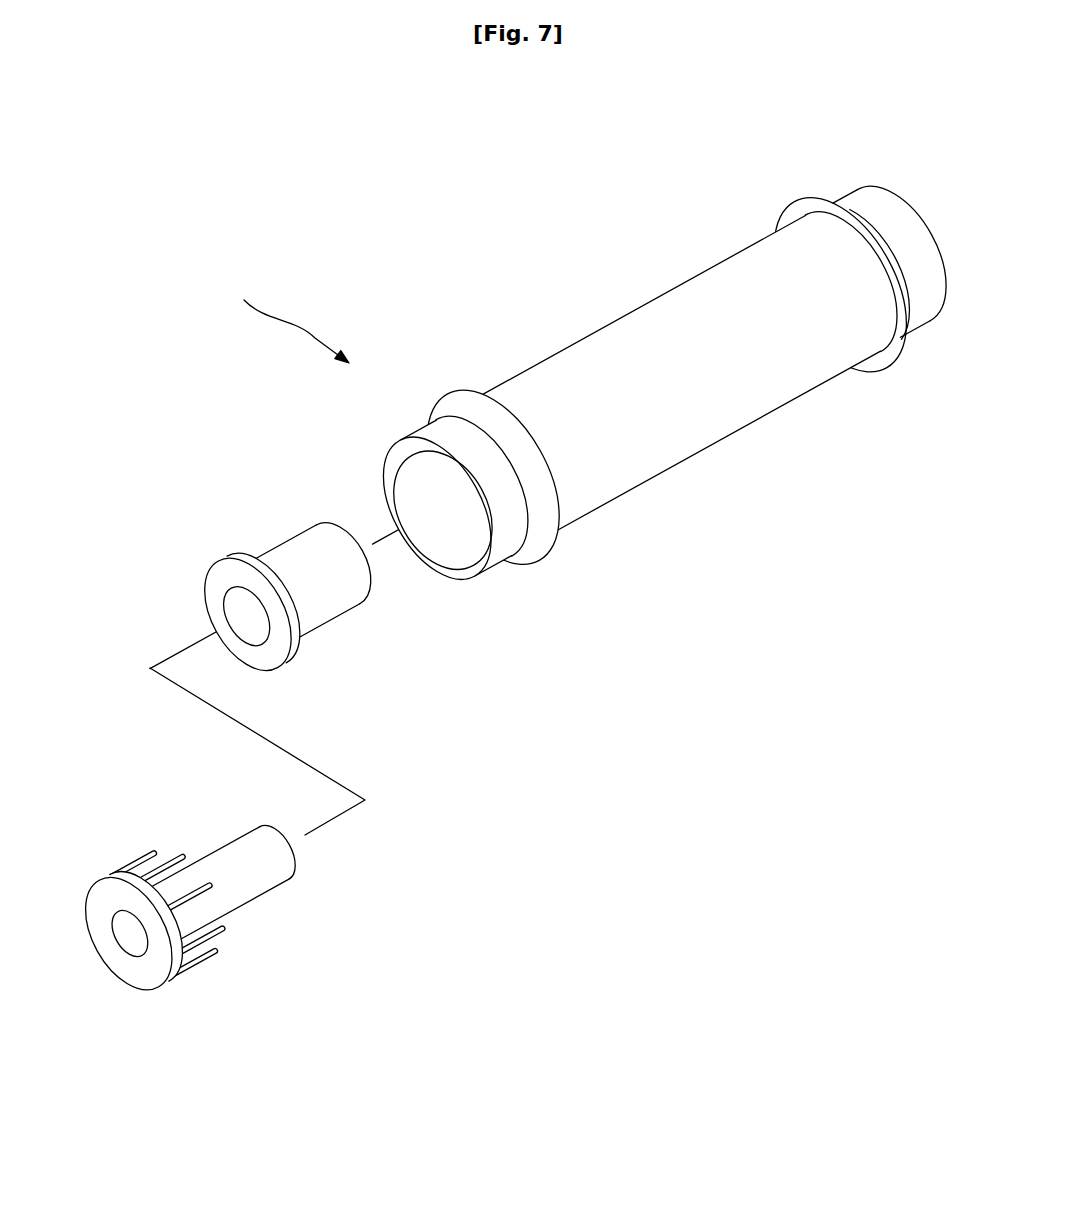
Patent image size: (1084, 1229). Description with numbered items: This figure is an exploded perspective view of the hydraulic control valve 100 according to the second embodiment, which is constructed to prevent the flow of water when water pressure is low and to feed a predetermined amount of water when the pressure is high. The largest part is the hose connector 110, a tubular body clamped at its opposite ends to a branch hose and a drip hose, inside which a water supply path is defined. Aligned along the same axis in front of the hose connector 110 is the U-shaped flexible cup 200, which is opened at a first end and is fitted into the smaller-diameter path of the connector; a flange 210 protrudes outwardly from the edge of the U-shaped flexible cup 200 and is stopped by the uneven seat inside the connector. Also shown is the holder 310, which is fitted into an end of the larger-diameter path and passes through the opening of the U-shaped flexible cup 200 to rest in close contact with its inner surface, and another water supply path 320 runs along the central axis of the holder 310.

The hydraulic control valve 100 is at (248, 297).
The hose connector 110 is at (632, 338).
The U-shaped flexible cup 200 is at (315, 585).
The flange 210 is at (302, 640).
The holder 310 is at (240, 872).
The water supply path 320 is at (128, 935).